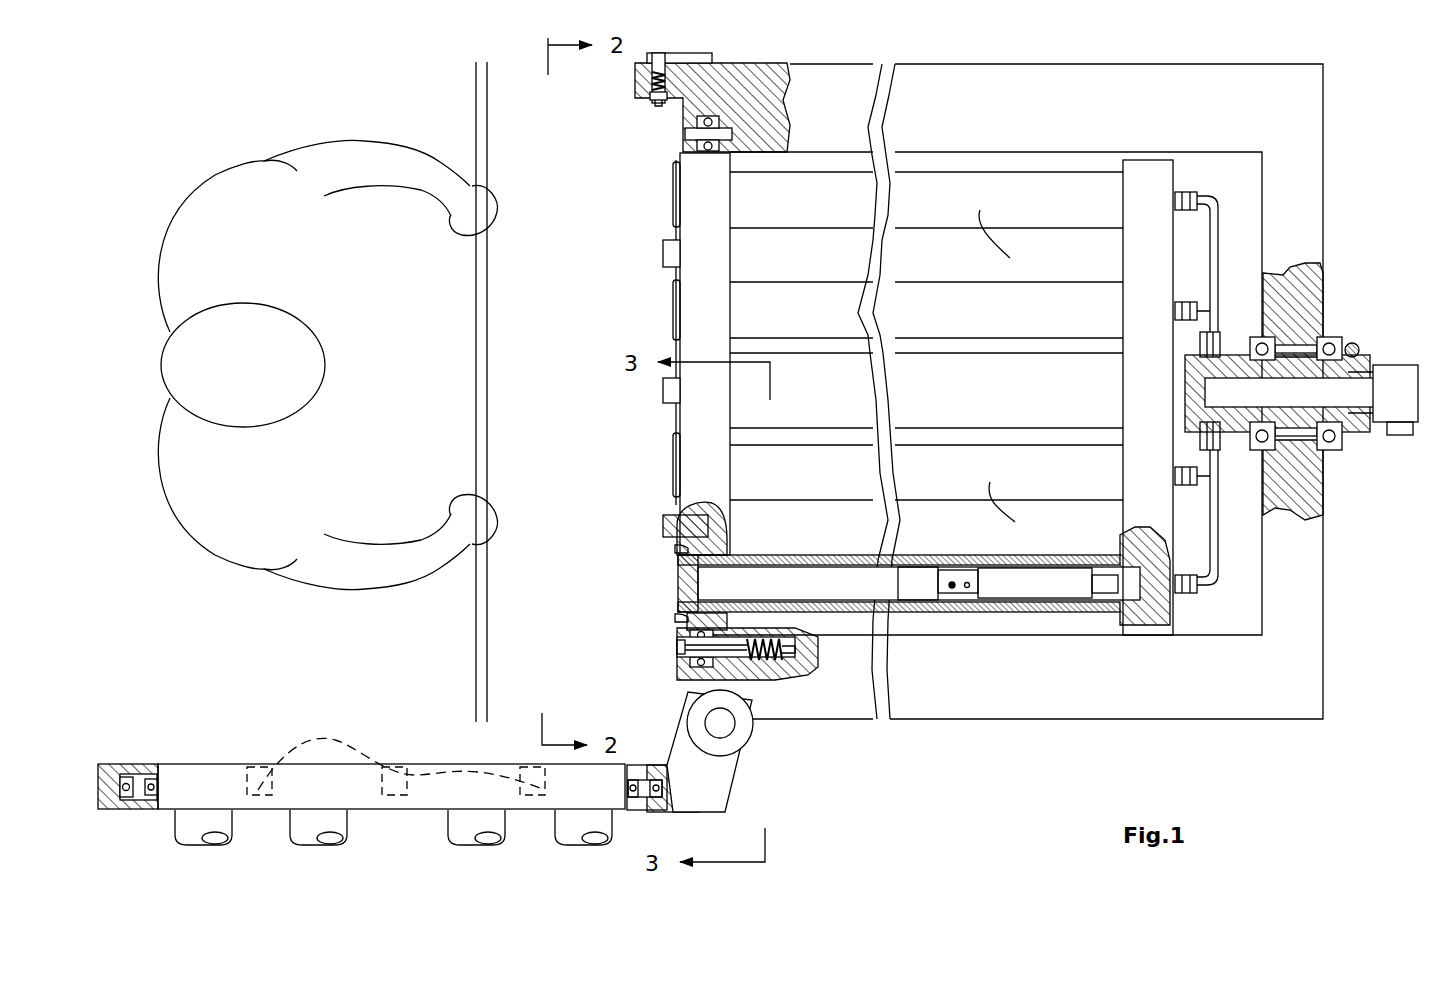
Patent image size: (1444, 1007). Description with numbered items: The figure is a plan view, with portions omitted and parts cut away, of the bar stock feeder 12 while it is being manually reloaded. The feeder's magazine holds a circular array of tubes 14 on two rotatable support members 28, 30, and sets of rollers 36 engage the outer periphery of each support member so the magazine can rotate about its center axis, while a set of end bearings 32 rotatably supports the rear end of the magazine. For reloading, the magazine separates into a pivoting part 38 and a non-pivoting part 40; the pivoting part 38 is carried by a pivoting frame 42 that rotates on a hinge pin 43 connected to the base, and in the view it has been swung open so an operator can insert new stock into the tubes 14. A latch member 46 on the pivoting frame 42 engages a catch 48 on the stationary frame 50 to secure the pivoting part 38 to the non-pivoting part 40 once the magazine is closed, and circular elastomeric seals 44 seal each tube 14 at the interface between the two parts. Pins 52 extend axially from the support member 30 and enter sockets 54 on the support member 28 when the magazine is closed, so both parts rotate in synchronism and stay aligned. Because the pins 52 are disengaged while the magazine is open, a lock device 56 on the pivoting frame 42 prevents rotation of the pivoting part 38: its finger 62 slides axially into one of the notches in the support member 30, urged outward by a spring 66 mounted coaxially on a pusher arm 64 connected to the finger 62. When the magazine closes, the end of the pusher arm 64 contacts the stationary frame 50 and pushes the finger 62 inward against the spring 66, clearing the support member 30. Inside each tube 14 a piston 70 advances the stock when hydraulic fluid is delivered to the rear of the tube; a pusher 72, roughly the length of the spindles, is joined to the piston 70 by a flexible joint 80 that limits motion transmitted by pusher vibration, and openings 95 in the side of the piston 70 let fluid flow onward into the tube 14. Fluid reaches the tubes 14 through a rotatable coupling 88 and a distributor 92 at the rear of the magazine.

The bar stock feeder 12 is at (194, 680).
The tubes 14 is at (233, 818).
The support member 28 is at (205, 785).
The support member 30 is at (712, 262).
The end bearings 32 is at (1330, 345).
The rollers 36 is at (717, 116).
The pivoting part 38 is at (958, 726).
The non-pivoting part 40 is at (658, 842).
The pivoting frame 42 is at (1290, 703).
The hinge pin 43 is at (724, 726).
The elastomeric seals 44 is at (675, 165).
The latch member 46 is at (653, 103).
The catch 48 is at (112, 790).
The stationary frame 50 is at (737, 775).
The pins 52 is at (668, 250).
The sockets 54 is at (396, 760).
The lock device 56 is at (812, 622).
The finger 62 is at (742, 602).
The pusher arm 64 is at (678, 645).
The spring 66 is at (773, 678).
The piston 70 is at (1082, 615).
The pusher 72 is at (925, 580).
The flexible joint 80 is at (955, 603).
The rotatable coupling 88 is at (1400, 368).
The distributor 92 is at (1152, 250).
The openings 95 is at (1067, 605).